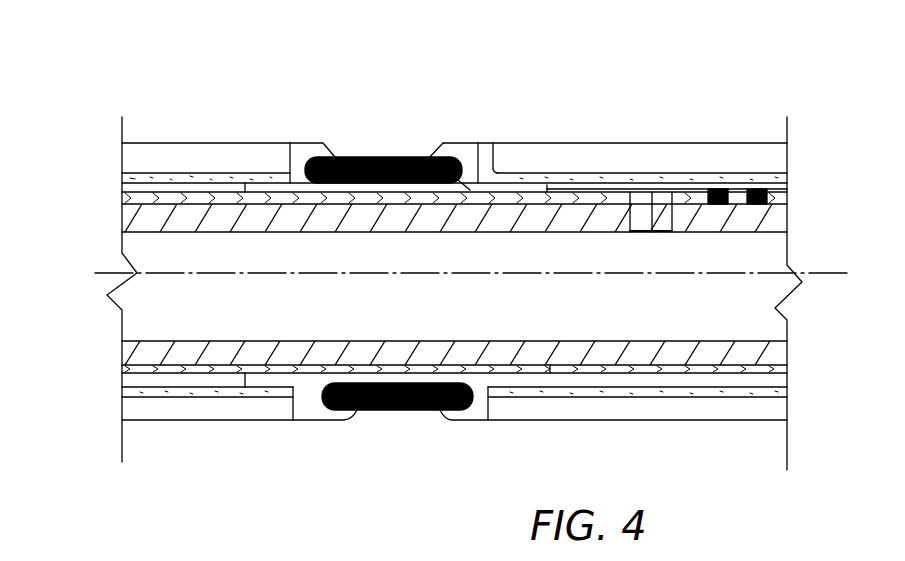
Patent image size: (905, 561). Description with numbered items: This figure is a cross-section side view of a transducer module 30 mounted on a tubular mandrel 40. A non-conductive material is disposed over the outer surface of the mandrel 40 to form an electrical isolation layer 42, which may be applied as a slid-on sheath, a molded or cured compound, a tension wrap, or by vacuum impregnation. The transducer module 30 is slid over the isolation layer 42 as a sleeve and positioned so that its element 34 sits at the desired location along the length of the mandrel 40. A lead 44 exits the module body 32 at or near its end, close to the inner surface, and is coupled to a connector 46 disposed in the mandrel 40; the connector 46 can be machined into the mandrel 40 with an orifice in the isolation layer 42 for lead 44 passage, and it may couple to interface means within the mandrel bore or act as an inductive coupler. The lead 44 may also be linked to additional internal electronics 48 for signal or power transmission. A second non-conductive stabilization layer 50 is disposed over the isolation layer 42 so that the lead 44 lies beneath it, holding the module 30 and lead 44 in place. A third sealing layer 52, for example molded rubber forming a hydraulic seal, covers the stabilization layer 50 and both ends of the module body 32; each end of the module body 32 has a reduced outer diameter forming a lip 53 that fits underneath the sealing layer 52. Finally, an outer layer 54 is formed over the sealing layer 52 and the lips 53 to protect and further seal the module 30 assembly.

The transducer module 30 is at (348, 80).
The module body 32 is at (472, 421).
The element 34 is at (382, 417).
The mandrel 40 is at (787, 352).
The electrical isolation layer 42 is at (121, 195).
The lead 44 is at (478, 143).
The connector 46 is at (629, 233).
The electronics 48 is at (742, 189).
The stabilization layer 50 is at (128, 378).
The sealing layer 52 is at (177, 175).
The lip 53 is at (255, 175).
The outer layer 54 is at (677, 153).